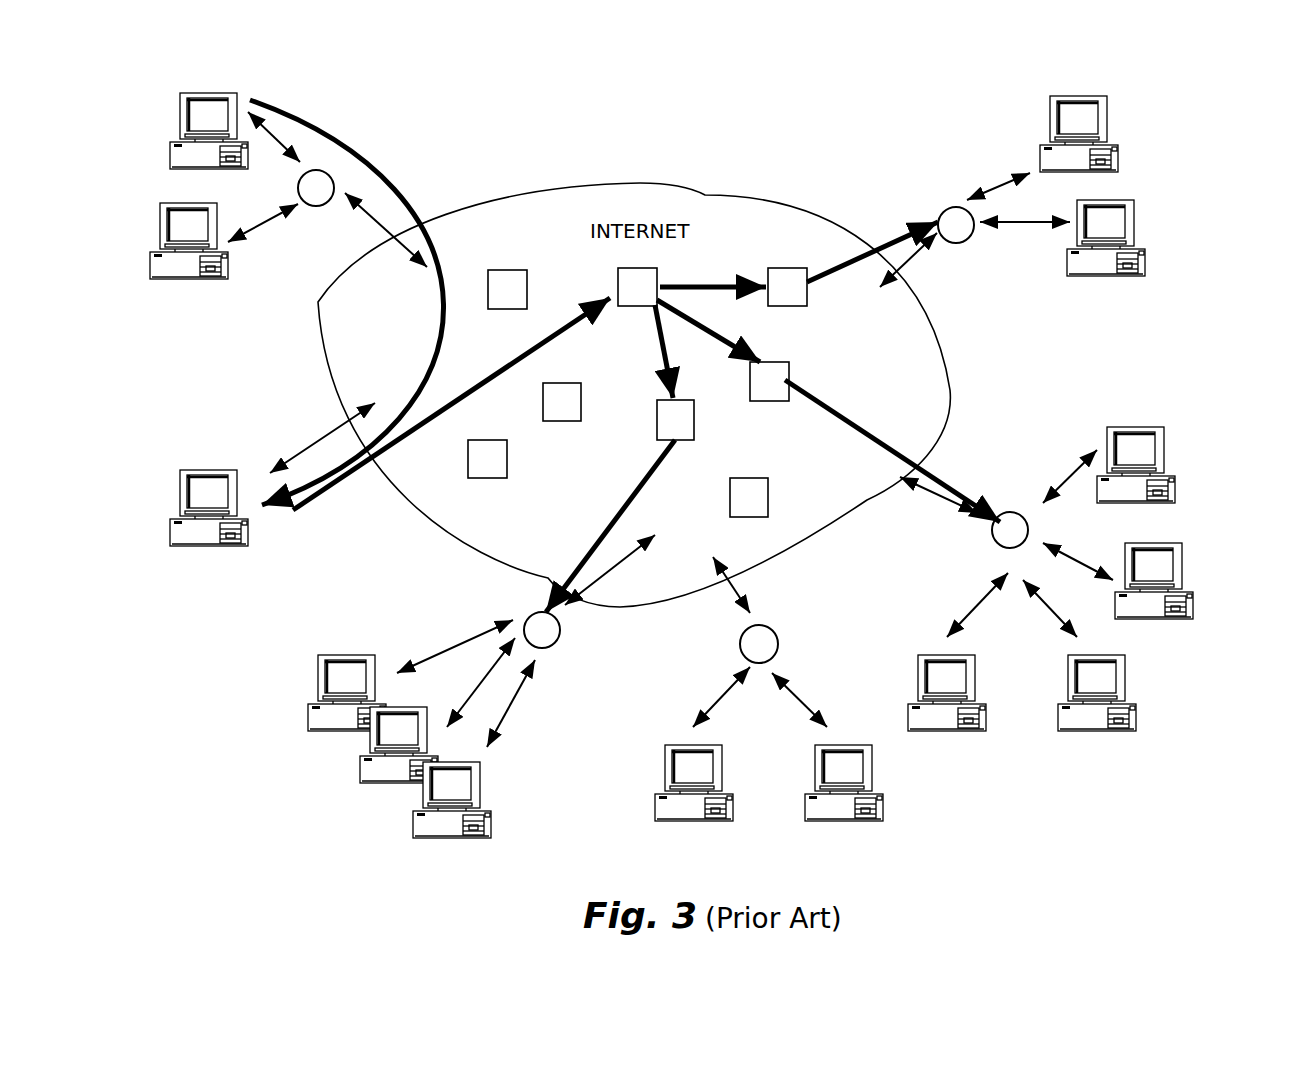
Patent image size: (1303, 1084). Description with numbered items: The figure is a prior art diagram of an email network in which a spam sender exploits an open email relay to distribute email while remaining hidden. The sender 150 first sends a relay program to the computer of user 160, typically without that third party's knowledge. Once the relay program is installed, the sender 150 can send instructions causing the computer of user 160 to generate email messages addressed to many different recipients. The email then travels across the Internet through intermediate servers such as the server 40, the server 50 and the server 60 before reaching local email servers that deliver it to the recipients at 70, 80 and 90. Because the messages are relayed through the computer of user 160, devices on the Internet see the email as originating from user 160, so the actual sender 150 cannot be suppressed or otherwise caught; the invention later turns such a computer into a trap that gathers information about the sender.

The server 40 is at (692, 333).
The server 50 is at (853, 264).
The server 60 is at (620, 506).
The recipients 70 is at (306, 790).
The recipients 80 is at (1245, 686).
The recipients 90 is at (1190, 162).
The sender 150 is at (180, 94).
The user's computer 160 is at (180, 469).